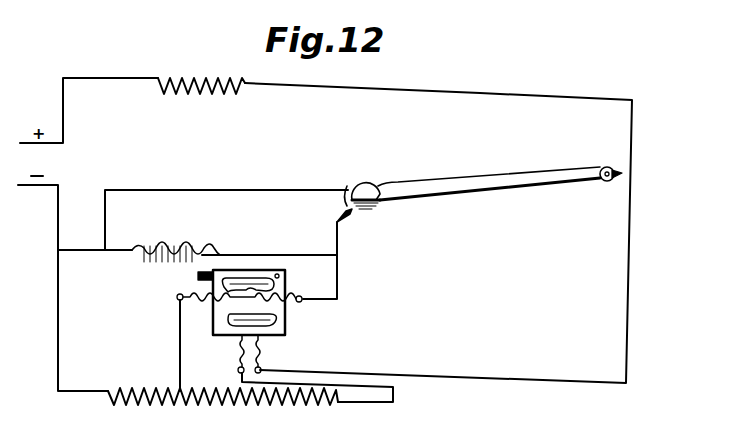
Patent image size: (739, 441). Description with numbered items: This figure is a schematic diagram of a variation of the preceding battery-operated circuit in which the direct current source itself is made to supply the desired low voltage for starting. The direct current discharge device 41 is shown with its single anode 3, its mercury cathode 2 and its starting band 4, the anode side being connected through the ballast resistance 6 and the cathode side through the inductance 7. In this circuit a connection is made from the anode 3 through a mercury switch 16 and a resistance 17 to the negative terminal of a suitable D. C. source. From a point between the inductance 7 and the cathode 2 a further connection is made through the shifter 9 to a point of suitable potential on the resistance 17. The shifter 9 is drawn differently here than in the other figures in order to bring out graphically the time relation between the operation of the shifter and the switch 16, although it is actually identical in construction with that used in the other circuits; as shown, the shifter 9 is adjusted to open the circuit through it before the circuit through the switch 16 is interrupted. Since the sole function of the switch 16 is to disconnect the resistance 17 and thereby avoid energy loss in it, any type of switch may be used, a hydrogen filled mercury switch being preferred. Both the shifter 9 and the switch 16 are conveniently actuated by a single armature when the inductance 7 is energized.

The mercury cathode 2 is at (365, 192).
The anode 3 is at (606, 181).
The starting band 4 is at (366, 212).
The ballast resistance 6 is at (181, 78).
The inductance 7 is at (158, 248).
The shifter 9 is at (282, 288).
The mercury switch 16 is at (278, 318).
The resistance 17 is at (160, 372).
The direct current discharge device 41 is at (480, 190).